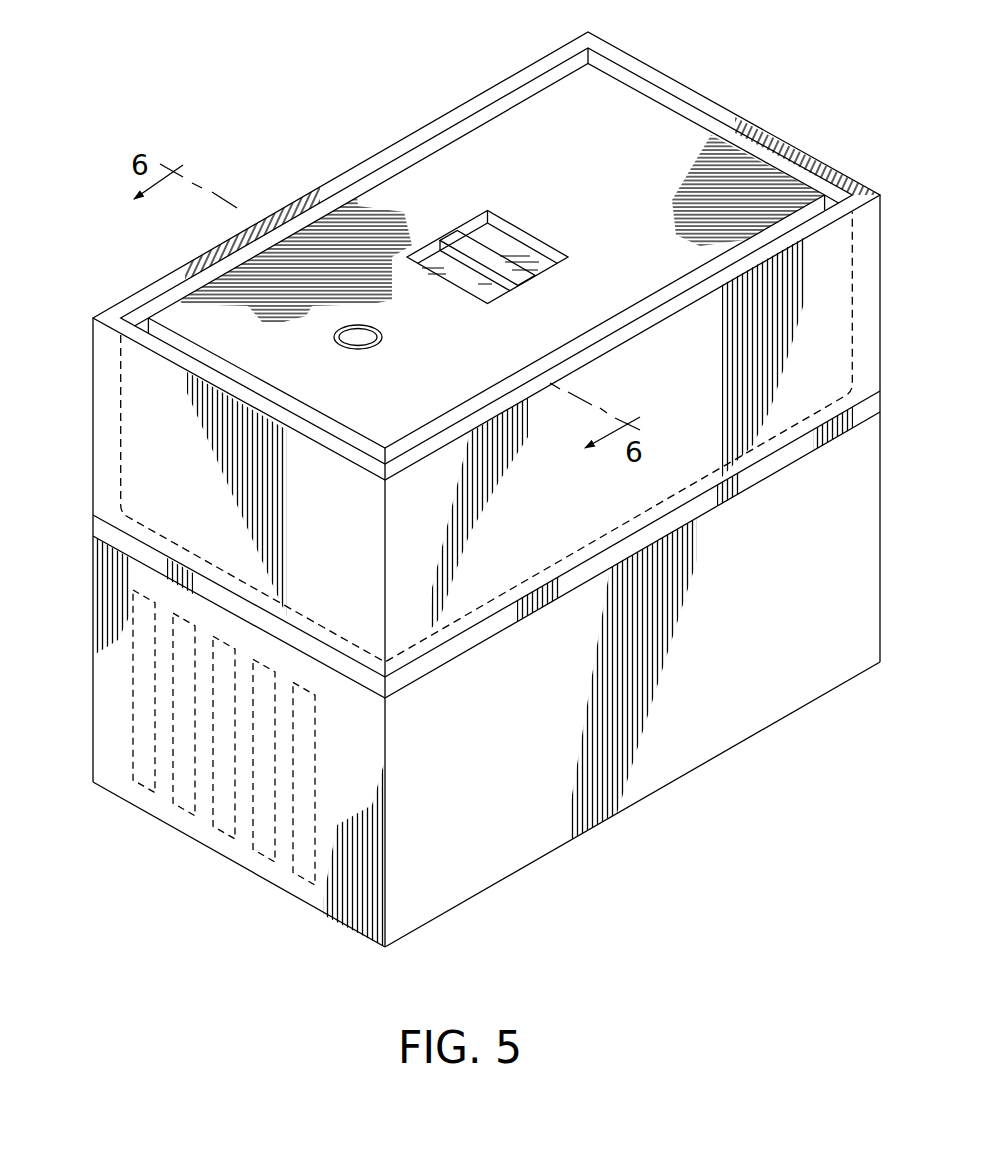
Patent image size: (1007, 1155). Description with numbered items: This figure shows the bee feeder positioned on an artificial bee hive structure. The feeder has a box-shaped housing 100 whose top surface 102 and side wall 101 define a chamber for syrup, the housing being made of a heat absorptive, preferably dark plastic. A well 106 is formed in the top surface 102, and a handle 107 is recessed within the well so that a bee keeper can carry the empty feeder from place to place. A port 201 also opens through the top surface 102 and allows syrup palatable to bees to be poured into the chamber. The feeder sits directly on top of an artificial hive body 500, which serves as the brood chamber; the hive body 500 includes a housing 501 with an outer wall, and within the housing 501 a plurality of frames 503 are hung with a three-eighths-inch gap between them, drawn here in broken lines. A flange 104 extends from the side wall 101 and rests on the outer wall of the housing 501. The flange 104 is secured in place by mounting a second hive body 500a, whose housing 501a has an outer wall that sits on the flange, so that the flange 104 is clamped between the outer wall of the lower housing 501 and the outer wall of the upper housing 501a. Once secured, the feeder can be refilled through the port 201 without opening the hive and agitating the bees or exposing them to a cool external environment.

The housing 100 is at (487, 101).
The side wall 101 is at (172, 335).
The top surface 102 is at (718, 158).
The flange 104 is at (775, 472).
The well 106 is at (537, 262).
The handle 107 is at (455, 233).
The port 201 is at (383, 338).
The artificial hive body 500 is at (87, 750).
The second hive body 500a is at (87, 402).
The housing 501 is at (90, 612).
The housing 501a is at (91, 368).
The frames 503 is at (147, 778).